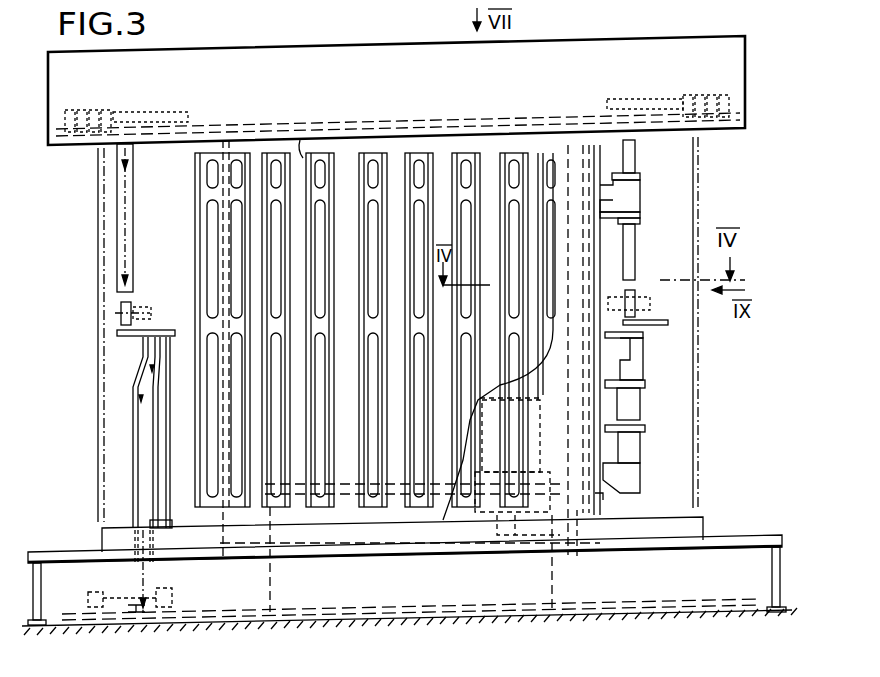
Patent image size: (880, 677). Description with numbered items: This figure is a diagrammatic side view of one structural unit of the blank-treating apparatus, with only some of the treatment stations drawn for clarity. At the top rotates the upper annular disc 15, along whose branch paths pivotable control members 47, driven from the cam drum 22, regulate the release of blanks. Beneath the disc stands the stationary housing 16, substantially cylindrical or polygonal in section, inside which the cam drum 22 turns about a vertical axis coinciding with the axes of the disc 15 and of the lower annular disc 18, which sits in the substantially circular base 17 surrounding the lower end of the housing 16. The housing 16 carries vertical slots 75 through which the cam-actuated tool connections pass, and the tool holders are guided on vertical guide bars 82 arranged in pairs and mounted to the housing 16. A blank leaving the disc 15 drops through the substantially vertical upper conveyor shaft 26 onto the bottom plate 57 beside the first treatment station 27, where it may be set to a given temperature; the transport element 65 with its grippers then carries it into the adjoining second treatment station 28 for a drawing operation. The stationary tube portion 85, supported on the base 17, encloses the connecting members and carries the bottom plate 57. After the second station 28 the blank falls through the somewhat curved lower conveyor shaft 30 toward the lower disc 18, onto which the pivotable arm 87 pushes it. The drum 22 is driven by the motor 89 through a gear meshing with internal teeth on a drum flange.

The upper annular disc 15 is at (432, 126).
The housing 16 is at (352, 515).
The base 17 is at (750, 535).
The lower annular disc 18 is at (700, 607).
The cam drum 22 is at (577, 512).
The upper conveyor shaft 26 is at (120, 250).
The first treatment station 27 is at (110, 305).
The second treatment station 28 is at (668, 313).
The lower conveyor shaft 30 is at (133, 455).
The control member 47 is at (102, 118).
The bottom plate 57 is at (143, 340).
The transport element 65 is at (640, 300).
The vertical slots 75 is at (418, 243).
The vertical guide bars 82 is at (300, 133).
The stationary tube portion 85 is at (165, 462).
The arm 87 is at (124, 602).
The motor 89 is at (520, 450).